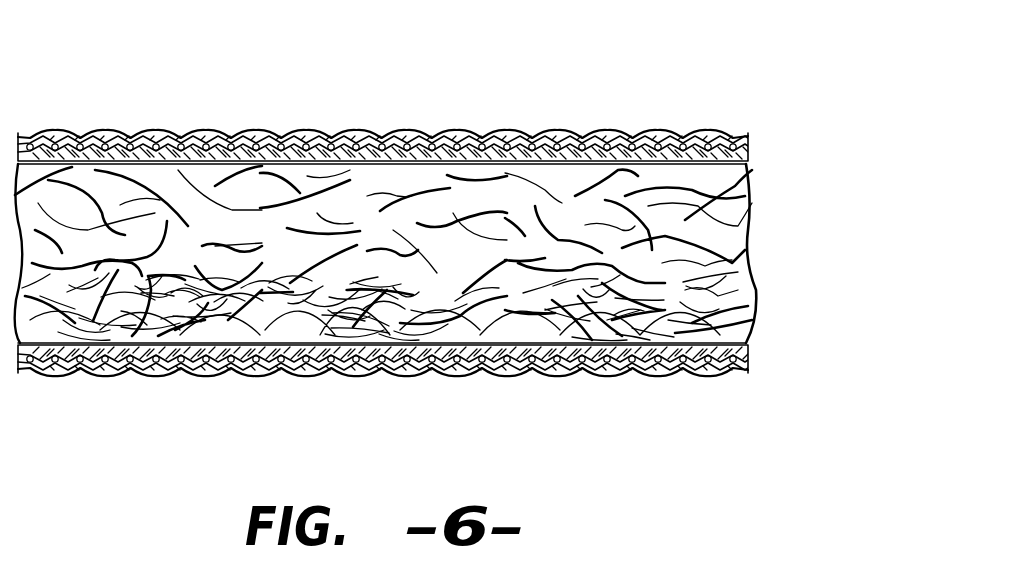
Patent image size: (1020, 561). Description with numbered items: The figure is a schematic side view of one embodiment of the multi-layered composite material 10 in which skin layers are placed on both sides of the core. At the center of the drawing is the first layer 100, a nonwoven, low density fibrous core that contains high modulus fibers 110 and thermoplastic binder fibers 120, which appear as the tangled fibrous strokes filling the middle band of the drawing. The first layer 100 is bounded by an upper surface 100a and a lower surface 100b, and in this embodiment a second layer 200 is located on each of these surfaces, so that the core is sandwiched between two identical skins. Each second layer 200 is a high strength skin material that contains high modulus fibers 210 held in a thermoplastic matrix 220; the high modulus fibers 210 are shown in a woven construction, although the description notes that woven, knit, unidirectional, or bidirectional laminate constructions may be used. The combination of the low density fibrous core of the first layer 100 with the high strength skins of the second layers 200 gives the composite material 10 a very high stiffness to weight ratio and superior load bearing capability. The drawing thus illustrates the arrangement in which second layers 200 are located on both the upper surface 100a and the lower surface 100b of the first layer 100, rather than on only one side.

The multi-layered composite material 10 is at (605, 103).
The first layer 100 is at (788, 167).
The upper surface 100a is at (748, 346).
The lower surface 100b is at (748, 163).
The high modulus fibers 110 is at (320, 164).
The thermoplastic binder fibers 120 is at (321, 346).
The second layer 200 is at (441, 258).
The high modulus fibers 210 is at (131, 131).
The thermoplastic matrix 220 is at (245, 138).